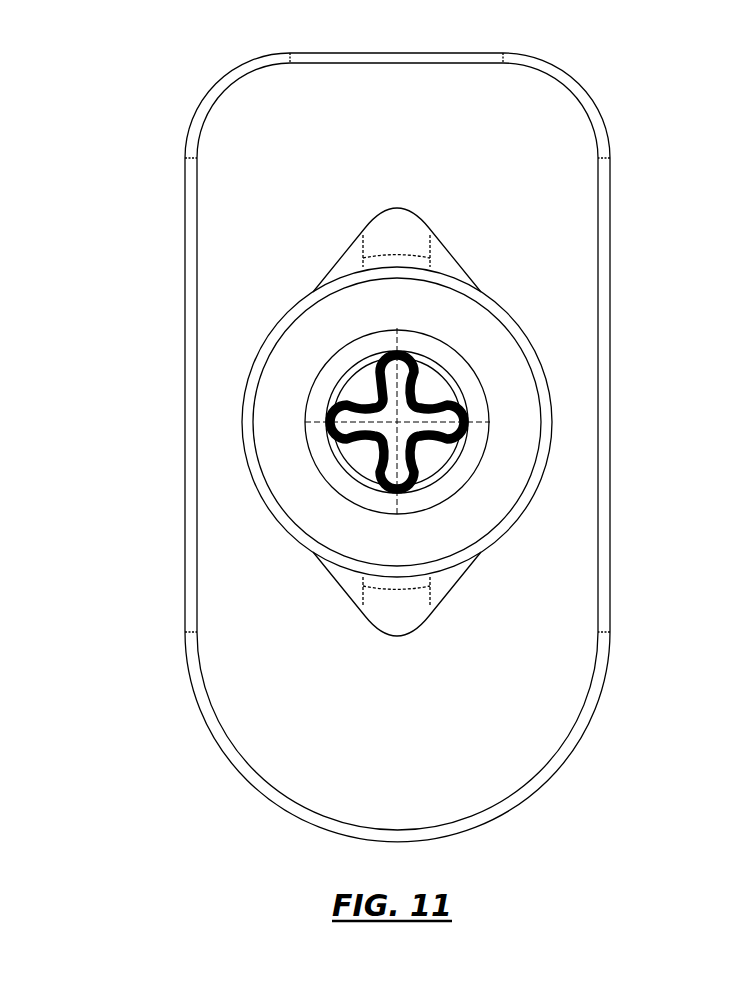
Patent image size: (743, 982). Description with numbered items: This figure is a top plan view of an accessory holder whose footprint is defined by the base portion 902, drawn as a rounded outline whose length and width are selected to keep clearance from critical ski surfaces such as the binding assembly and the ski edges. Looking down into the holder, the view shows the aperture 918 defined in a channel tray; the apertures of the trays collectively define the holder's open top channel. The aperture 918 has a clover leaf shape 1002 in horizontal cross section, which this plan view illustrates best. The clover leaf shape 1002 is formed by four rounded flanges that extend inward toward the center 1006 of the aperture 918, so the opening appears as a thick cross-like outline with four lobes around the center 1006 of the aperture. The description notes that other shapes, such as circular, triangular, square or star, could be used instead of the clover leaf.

The base portion 902 is at (417, 785).
The aperture 918 is at (410, 347).
The clover leaf shape 1002 is at (468, 408).
The center of aperture 1006 is at (330, 415).